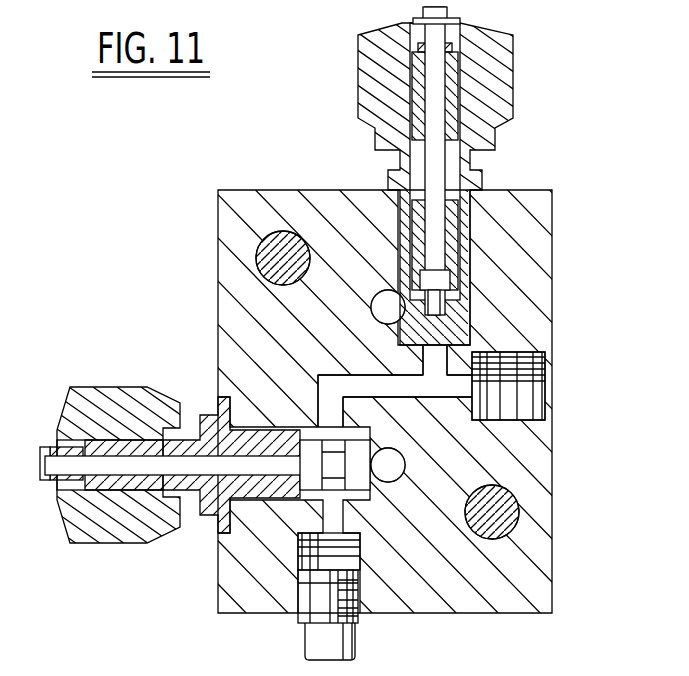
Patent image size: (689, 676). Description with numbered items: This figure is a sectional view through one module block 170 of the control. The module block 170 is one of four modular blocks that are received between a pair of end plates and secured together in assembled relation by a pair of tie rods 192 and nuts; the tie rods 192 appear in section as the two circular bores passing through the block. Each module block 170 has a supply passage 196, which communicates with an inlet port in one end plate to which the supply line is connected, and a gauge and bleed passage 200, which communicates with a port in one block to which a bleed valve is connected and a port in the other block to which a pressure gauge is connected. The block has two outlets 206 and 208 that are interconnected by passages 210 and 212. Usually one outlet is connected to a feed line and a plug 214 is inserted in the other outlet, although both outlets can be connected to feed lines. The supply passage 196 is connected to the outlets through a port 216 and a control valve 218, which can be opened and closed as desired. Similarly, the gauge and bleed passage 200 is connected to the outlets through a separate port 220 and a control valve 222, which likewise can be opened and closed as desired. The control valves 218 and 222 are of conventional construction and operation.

The module block 170 is at (553, 558).
The tie rod 192 is at (285, 237).
The supply passage 196 is at (395, 462).
The gauge and bleed passage 200 is at (372, 306).
The outlet 206 is at (533, 373).
The outlet 208 is at (300, 550).
The passage 210 is at (370, 382).
The passage 212 is at (330, 404).
The plug 214 is at (307, 644).
The port 216 is at (370, 473).
The control valve 218 is at (110, 352).
The port 220 is at (438, 360).
The control valve 222 is at (514, 60).